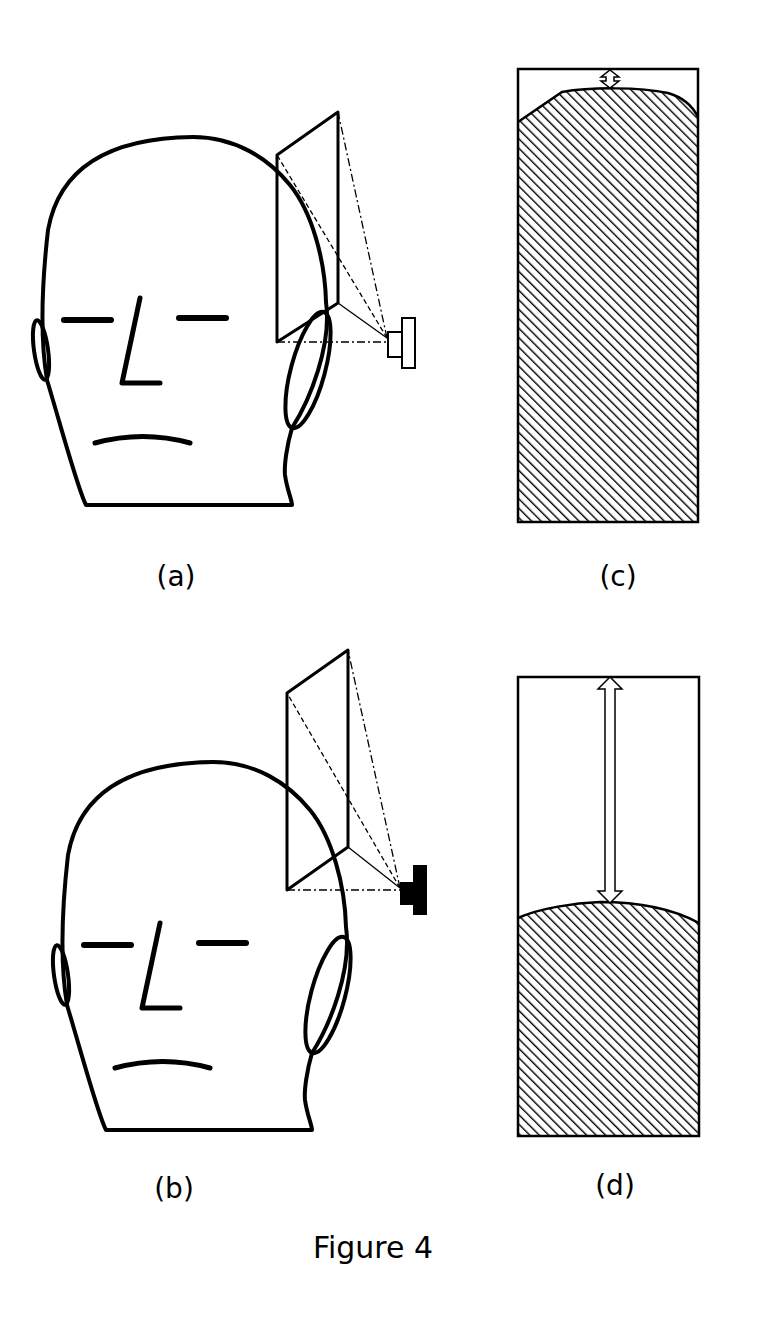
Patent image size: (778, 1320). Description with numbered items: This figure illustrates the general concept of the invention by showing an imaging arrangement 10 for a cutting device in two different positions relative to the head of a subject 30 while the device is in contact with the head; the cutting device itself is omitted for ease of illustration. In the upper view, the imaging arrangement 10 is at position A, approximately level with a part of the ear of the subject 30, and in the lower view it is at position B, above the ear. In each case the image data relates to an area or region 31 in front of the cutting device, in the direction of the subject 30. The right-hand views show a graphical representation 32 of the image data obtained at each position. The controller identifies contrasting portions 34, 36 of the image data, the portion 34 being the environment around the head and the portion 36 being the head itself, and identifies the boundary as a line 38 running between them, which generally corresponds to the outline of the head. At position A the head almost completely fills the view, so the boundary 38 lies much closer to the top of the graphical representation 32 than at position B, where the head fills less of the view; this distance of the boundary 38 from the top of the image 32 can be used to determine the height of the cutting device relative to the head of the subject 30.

The imaging arrangement 10 is at (413, 318).
The subject 30 is at (132, 173).
The area or region in front of the cutting device 31 is at (306, 131).
The graphical representation of the image data 32 is at (687, 83).
The portion 34 is at (658, 83).
The portion 36 is at (688, 193).
The line 38 is at (560, 93).